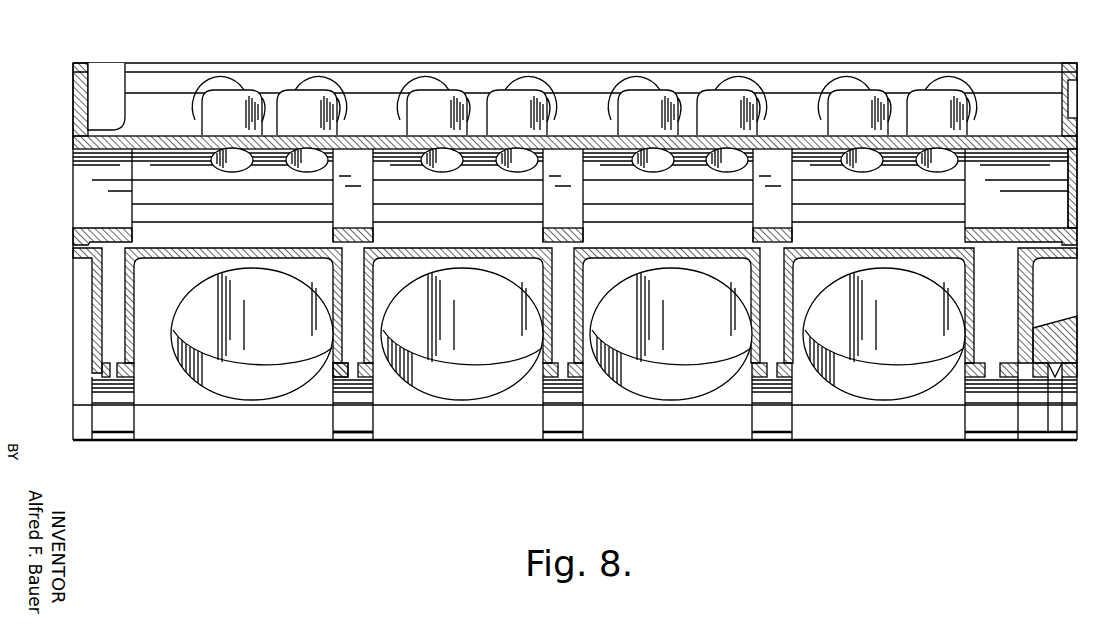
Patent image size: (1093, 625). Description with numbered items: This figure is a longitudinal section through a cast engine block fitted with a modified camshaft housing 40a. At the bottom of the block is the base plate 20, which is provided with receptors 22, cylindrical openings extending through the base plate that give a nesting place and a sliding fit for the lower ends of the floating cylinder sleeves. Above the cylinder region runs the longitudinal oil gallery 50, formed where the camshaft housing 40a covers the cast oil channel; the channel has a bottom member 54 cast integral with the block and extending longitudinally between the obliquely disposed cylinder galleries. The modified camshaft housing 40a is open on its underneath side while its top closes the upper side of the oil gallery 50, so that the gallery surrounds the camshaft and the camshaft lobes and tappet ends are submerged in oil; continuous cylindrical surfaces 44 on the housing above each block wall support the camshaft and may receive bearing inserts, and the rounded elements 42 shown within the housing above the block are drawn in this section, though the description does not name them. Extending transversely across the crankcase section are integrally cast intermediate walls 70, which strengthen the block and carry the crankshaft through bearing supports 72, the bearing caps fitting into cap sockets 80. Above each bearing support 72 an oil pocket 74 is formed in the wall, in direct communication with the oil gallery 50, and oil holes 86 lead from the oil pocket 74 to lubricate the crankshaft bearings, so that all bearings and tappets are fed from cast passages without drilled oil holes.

The base plate 20 is at (575, 362).
The receptors 22 is at (252, 386).
The modified camshaft housing 40a is at (72, 141).
The valve caps 42 is at (290, 91).
The cylindrical surfaces 44 is at (375, 232).
The oil gallery 50 is at (544, 205).
The bottom member 54 is at (403, 261).
The intermediate walls 70 is at (584, 360).
The bearing supports 72 is at (356, 420).
The oil pocket 74 is at (348, 347).
The cap sockets 80 is at (345, 436).
The oil holes 86 is at (352, 378).